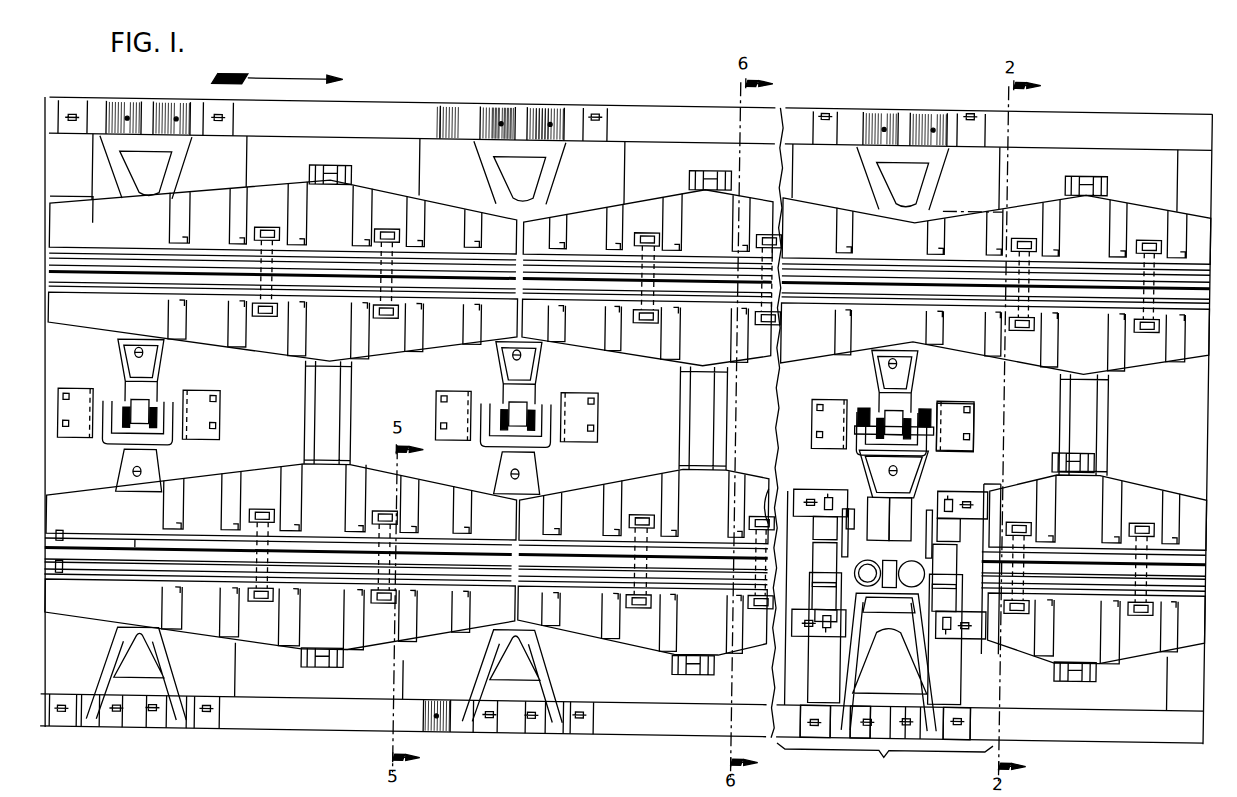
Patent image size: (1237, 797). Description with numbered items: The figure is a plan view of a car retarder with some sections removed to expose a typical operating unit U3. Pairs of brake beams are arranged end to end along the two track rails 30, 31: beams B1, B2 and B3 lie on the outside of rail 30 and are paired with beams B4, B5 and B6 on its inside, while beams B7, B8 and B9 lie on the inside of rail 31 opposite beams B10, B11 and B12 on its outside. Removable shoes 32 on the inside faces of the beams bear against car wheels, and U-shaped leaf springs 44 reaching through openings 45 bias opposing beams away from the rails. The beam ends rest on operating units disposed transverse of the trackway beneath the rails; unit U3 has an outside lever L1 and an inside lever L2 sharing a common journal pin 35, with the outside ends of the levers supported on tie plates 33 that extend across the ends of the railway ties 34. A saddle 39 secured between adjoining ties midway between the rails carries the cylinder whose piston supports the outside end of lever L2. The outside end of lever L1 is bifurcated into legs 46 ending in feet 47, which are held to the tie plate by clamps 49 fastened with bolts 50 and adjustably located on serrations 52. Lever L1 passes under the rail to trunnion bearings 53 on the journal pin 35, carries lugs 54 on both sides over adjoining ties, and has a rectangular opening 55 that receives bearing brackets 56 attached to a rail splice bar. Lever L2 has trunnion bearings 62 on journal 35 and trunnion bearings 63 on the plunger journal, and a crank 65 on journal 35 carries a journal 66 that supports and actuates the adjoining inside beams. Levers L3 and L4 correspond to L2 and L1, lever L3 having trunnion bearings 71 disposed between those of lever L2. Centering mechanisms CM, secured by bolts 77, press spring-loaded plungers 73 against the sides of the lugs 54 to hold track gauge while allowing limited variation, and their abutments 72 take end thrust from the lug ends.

The track rail 30 is at (1198, 558).
The track rail 31 is at (1201, 280).
The removable shoes 32 is at (426, 254).
The tie plates 33 is at (634, 104).
The railway ties 34 is at (418, 158).
The journal pin 35 is at (886, 527).
The saddle 39 is at (973, 396).
The U-shaped leaf springs 44 is at (265, 226).
The openings 45 is at (277, 228).
The legs 46 is at (851, 685).
The feet 47 is at (850, 719).
The clamps 49 is at (820, 716).
The bolts 50 is at (967, 716).
The serrations 52 is at (445, 722).
The trunnion bearings 53 is at (851, 505).
The lugs 54 is at (884, 565).
The rectangular opening 55 is at (896, 565).
The bearing brackets 56 is at (871, 571).
The trunnion bearings 62 is at (880, 562).
The trunnion bearings 63 is at (858, 400).
The crank 65 is at (896, 494).
The journal 66 is at (888, 505).
The trunnion bearings 71 is at (880, 410).
The abutments 72 is at (963, 527).
The plungers 73 is at (874, 596).
The bolts 77 is at (813, 489).
The brake beam B1 is at (271, 632).
The brake beam B2 is at (764, 631).
The brake beam B3 is at (1037, 633).
The brake beam B4 is at (266, 469).
The brake beam B5 is at (756, 469).
The brake beam B6 is at (1141, 474).
The brake beam B7 is at (257, 355).
The brake beam B8 is at (648, 353).
The brake beam B9 is at (1140, 363).
The brake beam B10 is at (257, 182).
The brake beam B11 is at (637, 189).
The brake beam B12 is at (1129, 189).
The outside lever L1 is at (929, 672).
The inside lever L2 is at (913, 470).
The lever L3 is at (903, 357).
The lever L4 is at (929, 177).
The operating unit U3 is at (884, 763).
The centering mechanism CM is at (825, 595).